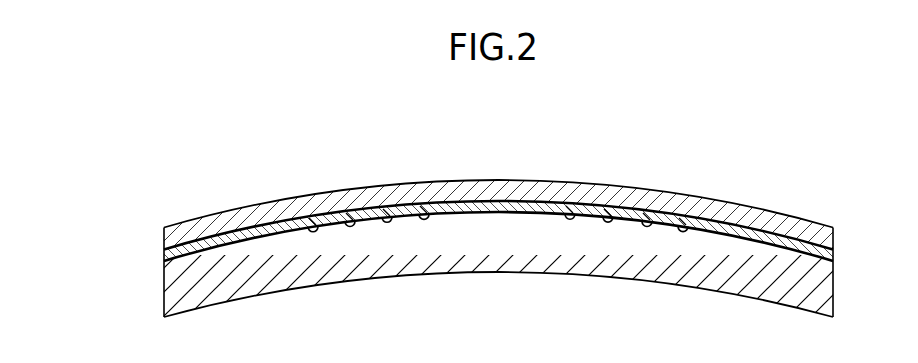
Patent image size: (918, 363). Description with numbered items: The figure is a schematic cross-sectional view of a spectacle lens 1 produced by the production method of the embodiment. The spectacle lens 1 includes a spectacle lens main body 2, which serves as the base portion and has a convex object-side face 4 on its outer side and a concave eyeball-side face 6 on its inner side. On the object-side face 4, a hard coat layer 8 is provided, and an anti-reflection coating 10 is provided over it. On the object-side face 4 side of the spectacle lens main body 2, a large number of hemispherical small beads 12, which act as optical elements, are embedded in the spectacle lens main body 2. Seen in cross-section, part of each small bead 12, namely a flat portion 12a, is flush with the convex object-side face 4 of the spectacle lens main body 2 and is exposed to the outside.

The spectacle lens 1 is at (638, 177).
The spectacle lens main body 2 is at (836, 288).
The object-side face 4 is at (836, 247).
The eyeball-side face 6 is at (745, 298).
The hard coat layer 8 is at (163, 251).
The anti-reflection coating 10 is at (163, 226).
The small beads 12 is at (311, 237).
The flat portion 12a is at (312, 226).